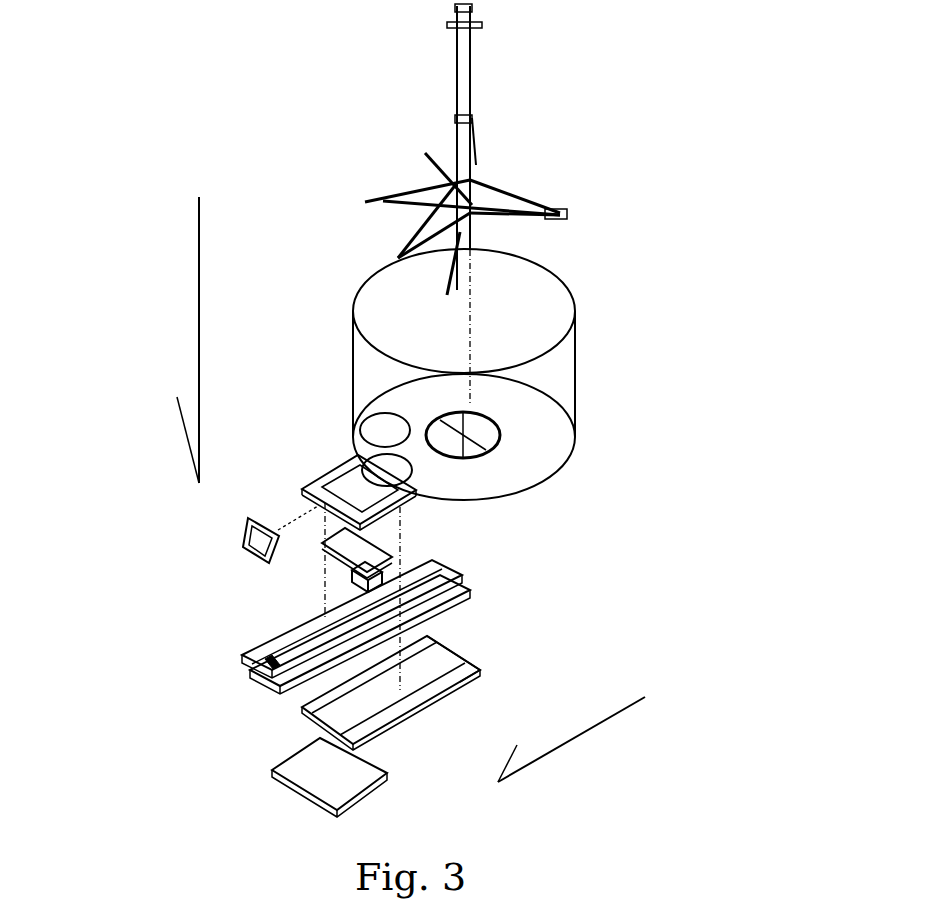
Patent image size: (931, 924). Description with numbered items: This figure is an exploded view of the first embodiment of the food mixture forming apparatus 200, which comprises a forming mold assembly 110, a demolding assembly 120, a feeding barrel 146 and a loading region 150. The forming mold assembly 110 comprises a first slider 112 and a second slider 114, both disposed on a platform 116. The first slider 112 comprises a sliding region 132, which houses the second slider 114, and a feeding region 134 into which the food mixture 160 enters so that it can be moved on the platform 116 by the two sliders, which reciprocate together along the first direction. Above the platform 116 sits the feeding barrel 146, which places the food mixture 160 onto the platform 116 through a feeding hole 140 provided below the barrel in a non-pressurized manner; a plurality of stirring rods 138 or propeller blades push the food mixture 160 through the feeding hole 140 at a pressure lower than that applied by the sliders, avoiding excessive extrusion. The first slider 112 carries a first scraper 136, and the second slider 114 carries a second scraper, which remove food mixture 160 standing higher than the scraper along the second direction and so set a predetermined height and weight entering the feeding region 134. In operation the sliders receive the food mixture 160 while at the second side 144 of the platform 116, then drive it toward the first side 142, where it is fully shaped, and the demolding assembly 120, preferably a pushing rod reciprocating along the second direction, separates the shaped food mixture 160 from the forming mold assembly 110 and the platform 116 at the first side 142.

The food mixture forming apparatus 200 is at (411, 410).
The forming mold assembly 110 is at (547, 567).
The first slider 112 is at (502, 575).
The second slider 114 is at (487, 520).
The platform 116 is at (540, 622).
The demolding assembly 120 is at (179, 514).
The sliding region 132 is at (289, 615).
The feeding region 134 is at (296, 634).
The first scraper 136 is at (320, 505).
The stirring rods 138 is at (552, 356).
The feeding hole 140 is at (561, 370).
The first side 142 is at (306, 693).
The second side 144 is at (486, 693).
The feeding barrel 146 is at (551, 252).
The loading region 150 is at (270, 777).
The food mixture 160 is at (165, 671).